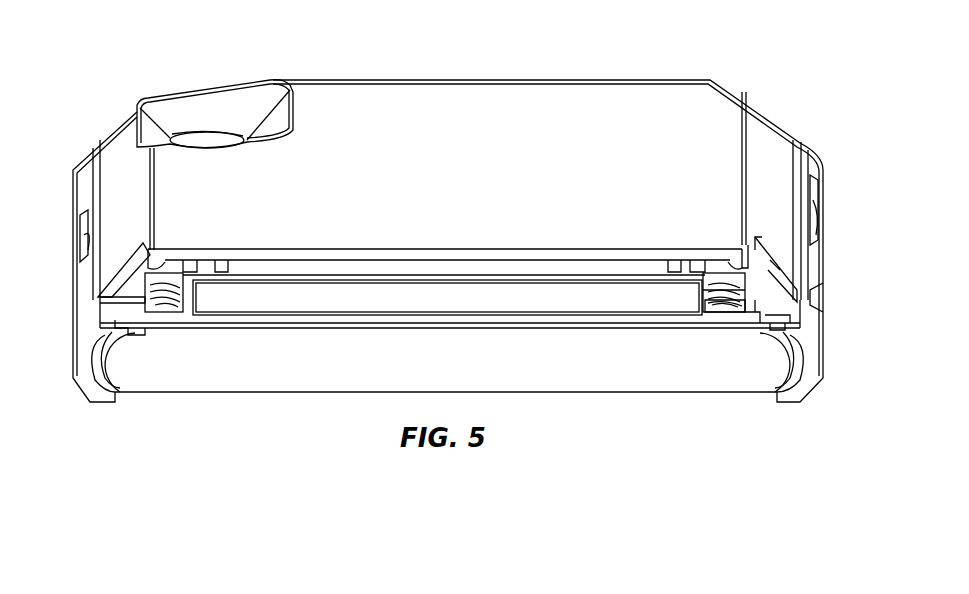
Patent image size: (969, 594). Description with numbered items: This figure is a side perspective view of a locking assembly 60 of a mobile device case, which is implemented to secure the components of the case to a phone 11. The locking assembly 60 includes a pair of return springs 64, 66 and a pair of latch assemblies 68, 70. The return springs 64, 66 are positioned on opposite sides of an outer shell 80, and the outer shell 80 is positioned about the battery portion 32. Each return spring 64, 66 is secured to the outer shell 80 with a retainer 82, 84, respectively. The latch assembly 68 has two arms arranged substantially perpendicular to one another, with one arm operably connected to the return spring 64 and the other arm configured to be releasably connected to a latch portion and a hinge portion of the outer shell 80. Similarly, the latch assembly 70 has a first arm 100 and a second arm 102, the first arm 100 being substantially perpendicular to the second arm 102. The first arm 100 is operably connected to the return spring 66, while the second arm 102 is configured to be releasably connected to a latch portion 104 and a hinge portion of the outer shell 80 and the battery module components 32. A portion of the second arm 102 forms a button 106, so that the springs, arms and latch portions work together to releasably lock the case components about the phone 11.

The phone 11 is at (200, 393).
The battery portion 32 is at (495, 300).
The locking assembly 60 is at (722, 55).
The return spring 64 is at (105, 300).
The return spring 66 is at (705, 293).
The latch assembly 68 is at (135, 330).
The latch assembly 70 is at (757, 315).
The outer shell 80 is at (462, 105).
The retainer 82 is at (170, 282).
The retainer 84 is at (712, 272).
The first arm 100 is at (740, 308).
The second arm 102 is at (753, 277).
The latch portion 104 is at (775, 322).
The button 106 is at (718, 278).